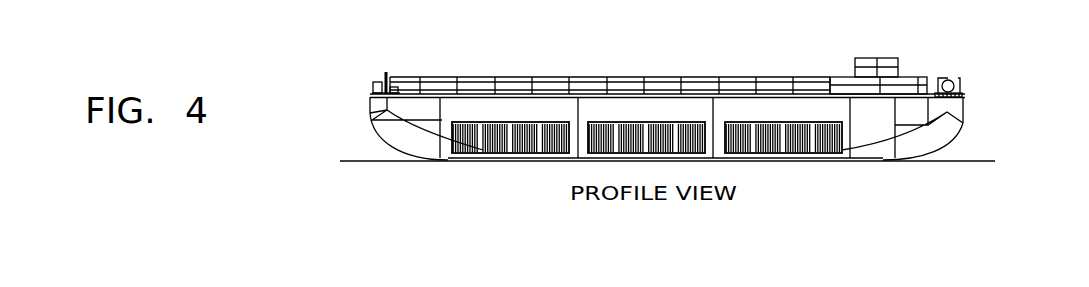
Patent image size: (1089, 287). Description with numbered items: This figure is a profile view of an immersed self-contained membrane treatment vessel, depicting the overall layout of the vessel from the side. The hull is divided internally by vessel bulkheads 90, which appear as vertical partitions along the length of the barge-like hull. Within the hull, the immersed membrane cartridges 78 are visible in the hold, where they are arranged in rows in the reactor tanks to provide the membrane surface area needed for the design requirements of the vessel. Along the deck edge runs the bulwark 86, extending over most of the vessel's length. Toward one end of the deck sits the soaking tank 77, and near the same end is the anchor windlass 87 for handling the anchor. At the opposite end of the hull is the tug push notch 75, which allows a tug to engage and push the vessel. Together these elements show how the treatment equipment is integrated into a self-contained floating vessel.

The tug push notch 75 is at (371, 78).
The soaking tank 77 is at (887, 58).
The immersed membrane cartridges 78 is at (797, 122).
The bulwark 86 is at (733, 77).
The anchor windlass 87 is at (953, 80).
The vessel bulkheads 90 is at (578, 143).